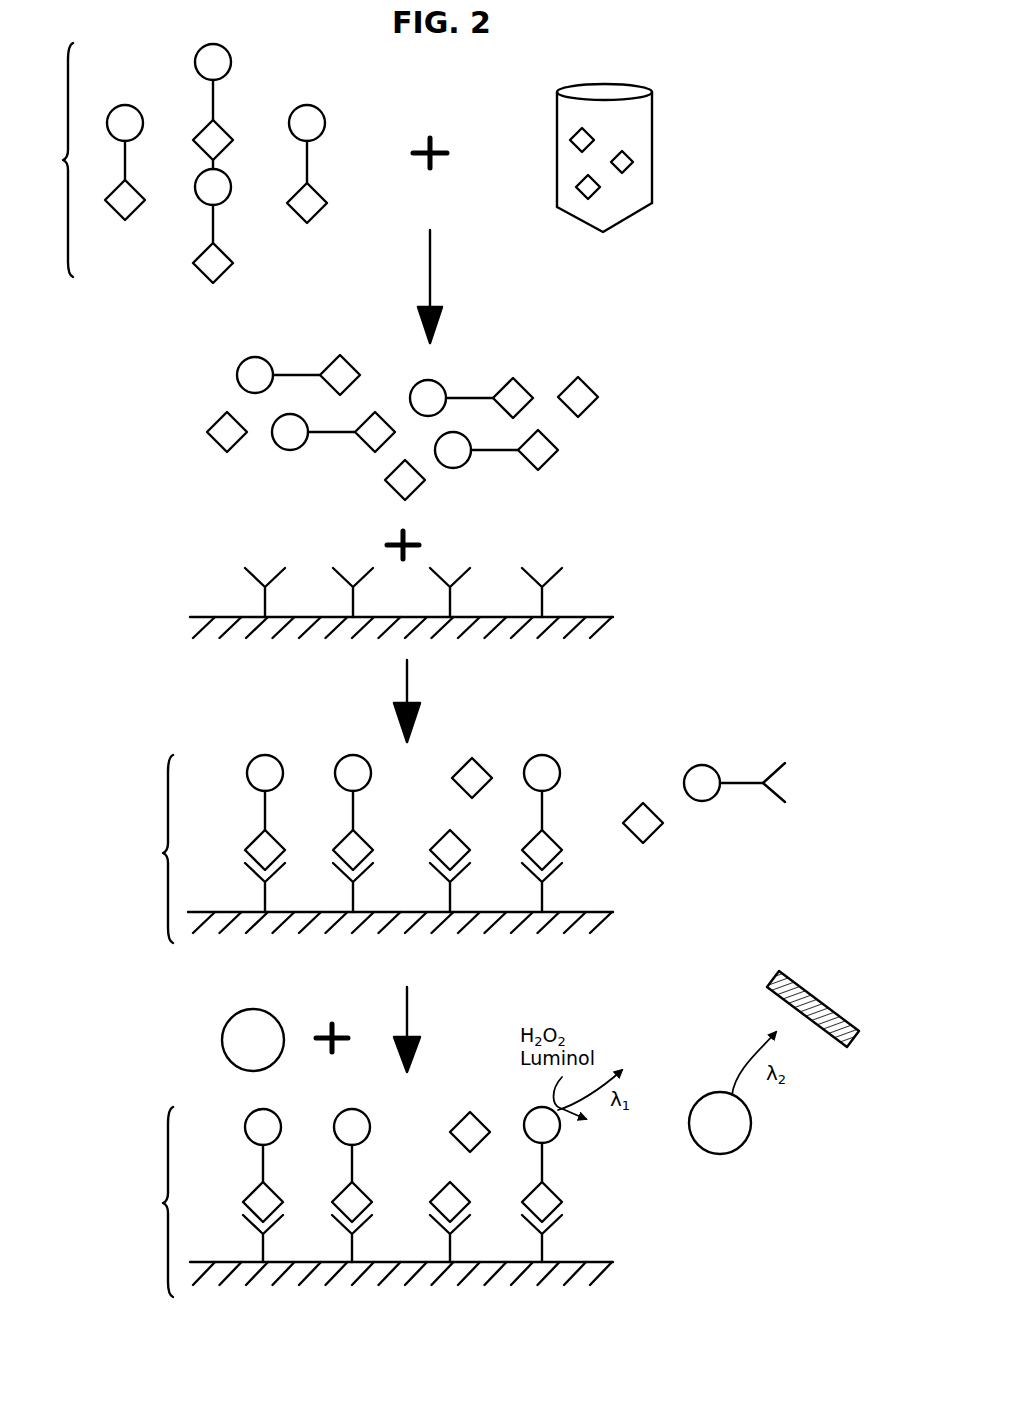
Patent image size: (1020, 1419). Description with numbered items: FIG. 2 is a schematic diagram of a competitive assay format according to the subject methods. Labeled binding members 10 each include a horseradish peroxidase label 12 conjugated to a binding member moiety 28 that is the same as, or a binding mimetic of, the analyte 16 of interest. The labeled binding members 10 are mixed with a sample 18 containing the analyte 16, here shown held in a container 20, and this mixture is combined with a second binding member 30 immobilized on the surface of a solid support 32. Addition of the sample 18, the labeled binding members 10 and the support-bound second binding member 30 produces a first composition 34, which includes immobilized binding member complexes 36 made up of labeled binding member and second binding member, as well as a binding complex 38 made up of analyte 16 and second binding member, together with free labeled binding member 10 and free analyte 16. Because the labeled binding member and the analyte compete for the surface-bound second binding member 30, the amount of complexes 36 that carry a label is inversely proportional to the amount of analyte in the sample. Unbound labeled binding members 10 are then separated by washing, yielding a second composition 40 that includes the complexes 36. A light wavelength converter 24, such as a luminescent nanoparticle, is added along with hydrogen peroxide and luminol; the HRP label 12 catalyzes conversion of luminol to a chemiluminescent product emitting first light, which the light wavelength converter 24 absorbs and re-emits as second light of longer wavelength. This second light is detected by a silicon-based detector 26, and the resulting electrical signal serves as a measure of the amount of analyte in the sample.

The labeled binding member 10 is at (755, 848).
The horseradish peroxidase (HRP) label 12 is at (130, 105).
The binding member moiety 28 is at (125, 222).
The sample container 20 is at (653, 120).
The analyte 16 is at (633, 158).
The sample 18 is at (627, 198).
The second binding member 30 is at (546, 594).
The solid support 32 is at (590, 625).
The first composition 34 is at (409, 1008).
The immobilized binding member complex 36 is at (377, 852).
The binding complex 38 is at (472, 847).
The light wavelength converter 24 is at (222, 1037).
The silicon-based detector 26 is at (820, 993).
The second composition 40 is at (370, 1202).